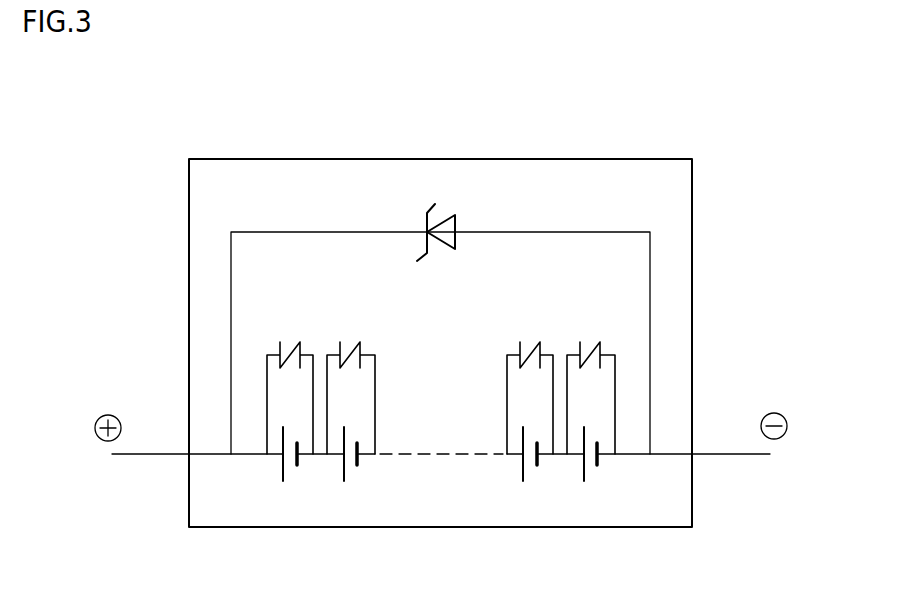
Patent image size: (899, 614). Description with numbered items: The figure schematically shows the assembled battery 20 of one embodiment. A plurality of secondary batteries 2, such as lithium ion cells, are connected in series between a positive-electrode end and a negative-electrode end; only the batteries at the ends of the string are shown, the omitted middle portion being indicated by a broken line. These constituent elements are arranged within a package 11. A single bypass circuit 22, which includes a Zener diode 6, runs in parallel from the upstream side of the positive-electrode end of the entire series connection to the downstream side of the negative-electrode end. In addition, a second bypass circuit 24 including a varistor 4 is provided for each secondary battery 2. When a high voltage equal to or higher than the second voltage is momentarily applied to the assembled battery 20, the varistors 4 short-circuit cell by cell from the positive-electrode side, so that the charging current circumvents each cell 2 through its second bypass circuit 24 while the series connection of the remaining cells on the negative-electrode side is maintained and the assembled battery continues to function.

The secondary battery 2 is at (347, 487).
The varistor 4 is at (292, 334).
The Zener diode 6 is at (459, 215).
The package 11 is at (617, 158).
The assembled battery 20 is at (716, 183).
The bypass circuit 22 is at (618, 231).
The second bypass circuit 24 is at (376, 418).